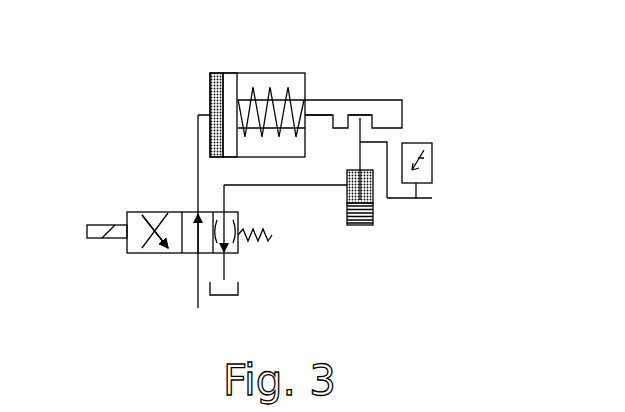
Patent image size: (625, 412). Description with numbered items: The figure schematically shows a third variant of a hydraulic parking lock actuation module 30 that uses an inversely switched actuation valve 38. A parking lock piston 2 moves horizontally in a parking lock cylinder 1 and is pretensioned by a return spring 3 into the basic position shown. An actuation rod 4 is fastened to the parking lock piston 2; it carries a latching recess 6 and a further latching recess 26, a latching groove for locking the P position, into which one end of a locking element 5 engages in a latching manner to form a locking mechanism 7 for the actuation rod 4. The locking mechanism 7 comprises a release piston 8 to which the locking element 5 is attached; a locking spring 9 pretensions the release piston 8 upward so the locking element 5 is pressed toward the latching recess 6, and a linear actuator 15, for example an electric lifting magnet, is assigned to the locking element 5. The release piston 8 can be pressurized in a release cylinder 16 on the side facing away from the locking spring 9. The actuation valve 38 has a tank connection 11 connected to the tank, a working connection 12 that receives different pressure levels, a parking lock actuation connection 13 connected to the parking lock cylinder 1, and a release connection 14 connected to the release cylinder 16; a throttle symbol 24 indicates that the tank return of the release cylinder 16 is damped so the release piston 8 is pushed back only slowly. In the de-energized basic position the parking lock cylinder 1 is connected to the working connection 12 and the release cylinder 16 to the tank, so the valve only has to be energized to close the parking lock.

The parking lock cylinder 1 is at (210, 80).
The parking lock piston 2 is at (230, 73).
The return spring 3 is at (270, 82).
The actuation rod 4 is at (390, 100).
The locking element 5 is at (362, 137).
The latching recess 6 is at (371, 117).
The locking mechanism 7 is at (444, 203).
The release piston 8 is at (375, 196).
The locking spring 9 is at (350, 227).
The tank connection 11 is at (234, 304).
The working connection 12 is at (197, 228).
The parking lock actuation connection 13 is at (182, 218).
The release connection 14 is at (285, 232).
The linear actuator 15 is at (432, 163).
The release cylinder 16 is at (348, 176).
The throttle symbol 24 is at (236, 240).
The further latching recess 26 is at (317, 122).
The hydraulic parking lock actuation module 30 is at (472, 102).
The actuation valve 38 is at (118, 279).